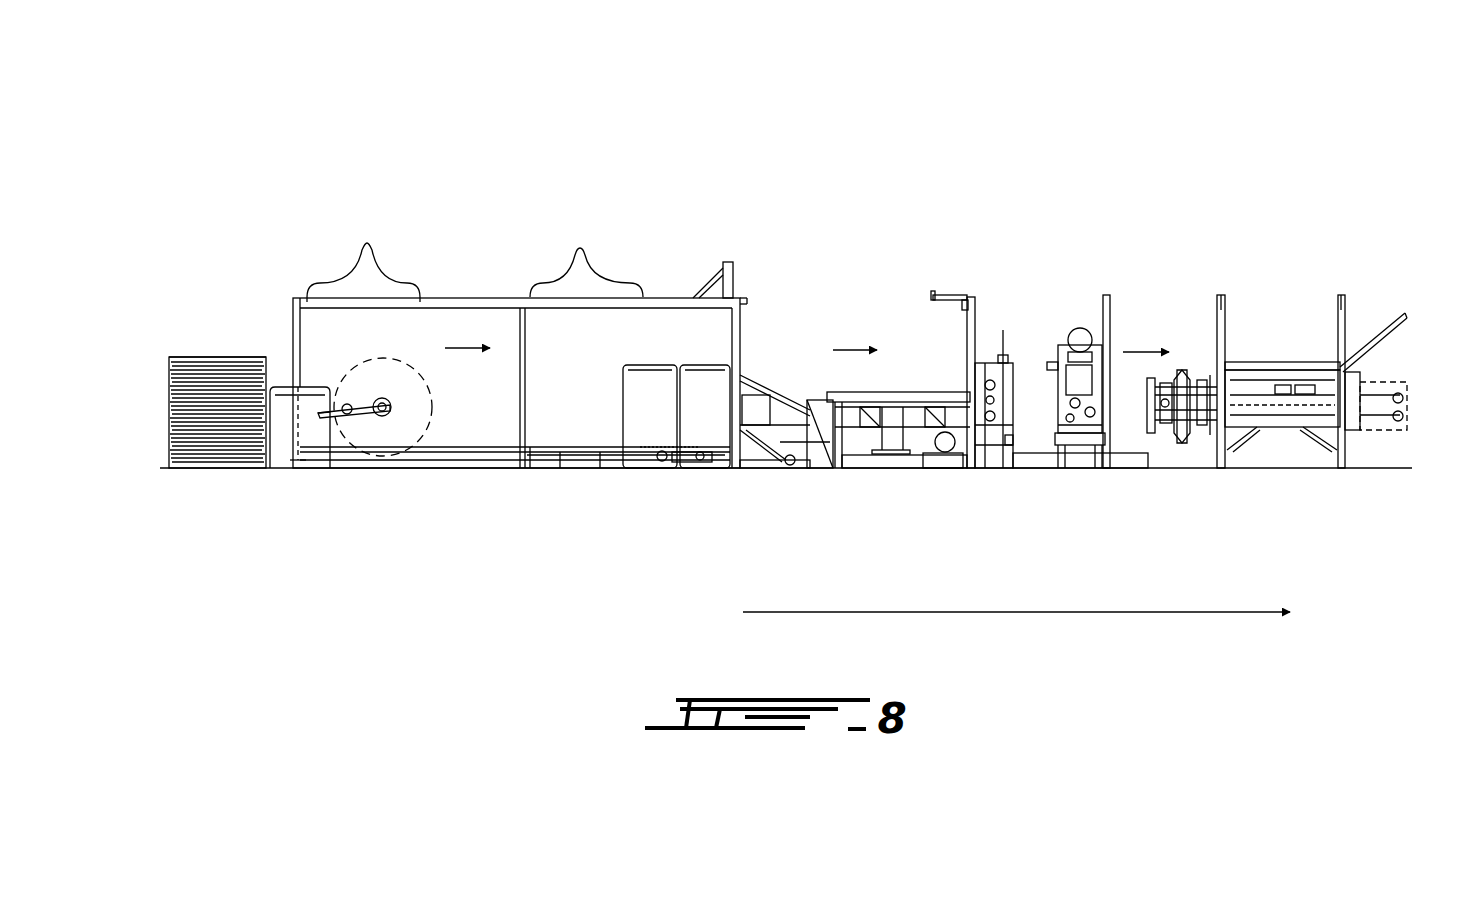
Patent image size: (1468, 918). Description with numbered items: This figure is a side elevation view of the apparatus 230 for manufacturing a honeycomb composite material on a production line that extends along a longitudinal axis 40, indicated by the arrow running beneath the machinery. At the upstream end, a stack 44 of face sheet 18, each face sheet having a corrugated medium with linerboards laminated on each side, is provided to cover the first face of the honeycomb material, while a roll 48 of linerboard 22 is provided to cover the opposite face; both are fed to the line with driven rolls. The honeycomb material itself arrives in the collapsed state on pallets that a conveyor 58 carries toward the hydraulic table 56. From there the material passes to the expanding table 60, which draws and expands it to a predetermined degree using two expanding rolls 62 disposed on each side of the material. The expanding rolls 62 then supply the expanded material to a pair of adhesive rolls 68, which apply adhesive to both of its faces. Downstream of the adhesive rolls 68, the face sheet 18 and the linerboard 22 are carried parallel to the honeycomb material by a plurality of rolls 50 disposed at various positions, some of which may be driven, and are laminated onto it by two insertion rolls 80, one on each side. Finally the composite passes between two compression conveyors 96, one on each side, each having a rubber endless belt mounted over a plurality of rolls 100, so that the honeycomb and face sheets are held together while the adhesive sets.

The face sheet 18 is at (160, 411).
The linerboard 22 is at (428, 427).
The longitudinal axis 40 is at (1145, 613).
The stack 44 is at (218, 357).
The roll 48 is at (388, 440).
The rolls 50 is at (967, 468).
The hydraulic table 56 is at (697, 472).
The conveyor 58 is at (568, 460).
The expanding table 60 is at (915, 362).
The expanding rolls 62 is at (1015, 373).
The adhesive rolls 68 is at (1093, 380).
The insertion rolls 80 is at (1148, 392).
The compression conveyors 96 is at (1268, 345).
The rolls 100 is at (1398, 382).
The apparatus 230 is at (992, 140).